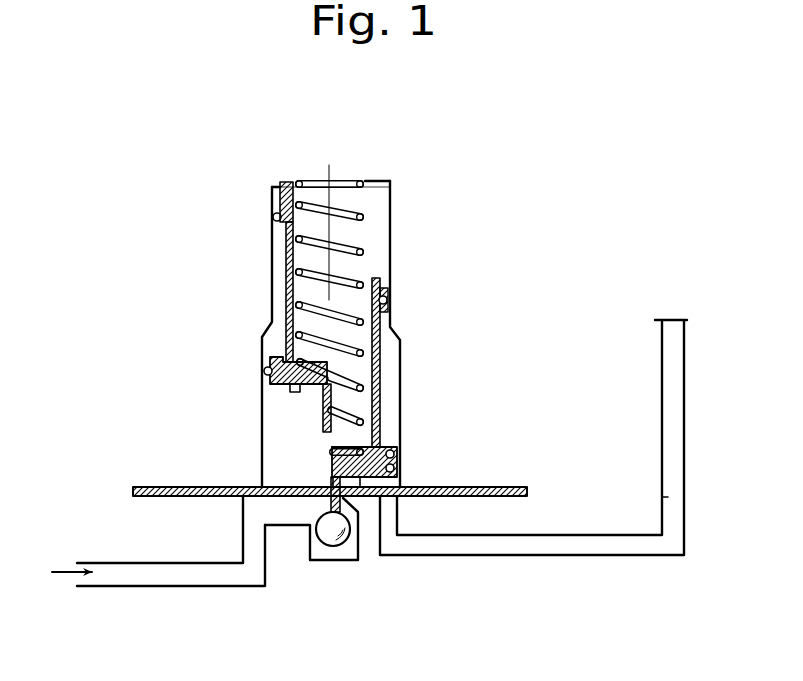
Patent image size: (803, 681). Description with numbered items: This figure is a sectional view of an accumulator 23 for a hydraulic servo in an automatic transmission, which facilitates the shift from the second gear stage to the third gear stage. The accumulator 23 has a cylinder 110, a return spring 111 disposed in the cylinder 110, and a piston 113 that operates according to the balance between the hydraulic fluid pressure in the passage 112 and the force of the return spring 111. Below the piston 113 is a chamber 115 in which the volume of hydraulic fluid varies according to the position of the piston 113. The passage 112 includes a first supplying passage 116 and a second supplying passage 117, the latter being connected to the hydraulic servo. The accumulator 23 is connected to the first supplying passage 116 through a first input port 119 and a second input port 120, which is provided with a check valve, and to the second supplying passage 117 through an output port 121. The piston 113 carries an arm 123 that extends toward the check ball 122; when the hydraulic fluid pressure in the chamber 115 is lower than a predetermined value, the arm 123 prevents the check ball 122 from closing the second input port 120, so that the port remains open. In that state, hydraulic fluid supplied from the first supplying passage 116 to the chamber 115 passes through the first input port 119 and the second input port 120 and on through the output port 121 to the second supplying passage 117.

The accumulator 23 is at (400, 228).
The cylinder 110 is at (402, 342).
The return spring 111 is at (390, 256).
The passage 112 is at (540, 522).
The piston 113 is at (287, 273).
The chamber 115 is at (278, 398).
The first supplying passage 116 is at (113, 575).
The second supplying passage 117 is at (610, 538).
The first input port 119 is at (290, 497).
The second input port 120 is at (348, 502).
The output port 121 is at (398, 483).
The check ball 122 is at (328, 545).
The arm 123 is at (323, 420).